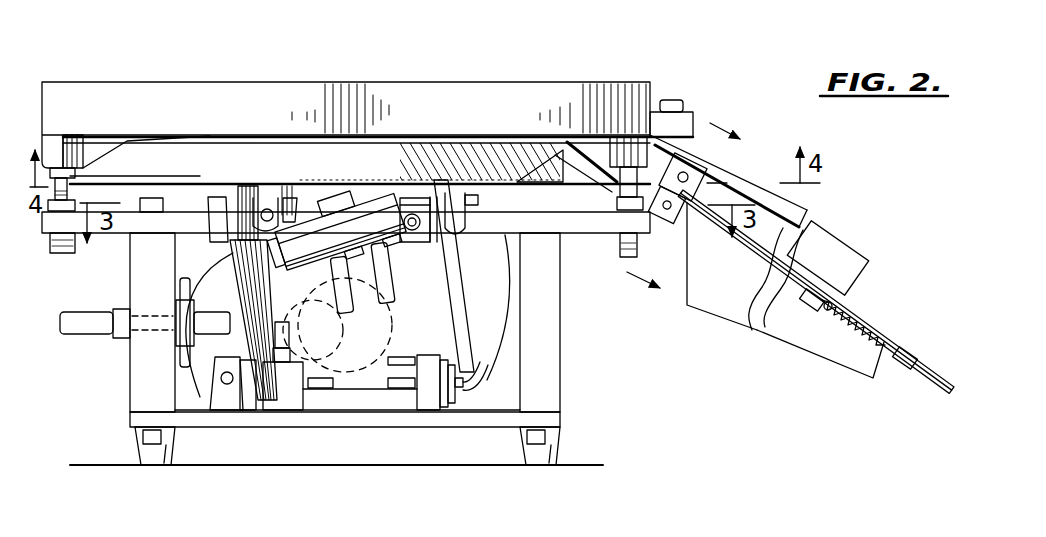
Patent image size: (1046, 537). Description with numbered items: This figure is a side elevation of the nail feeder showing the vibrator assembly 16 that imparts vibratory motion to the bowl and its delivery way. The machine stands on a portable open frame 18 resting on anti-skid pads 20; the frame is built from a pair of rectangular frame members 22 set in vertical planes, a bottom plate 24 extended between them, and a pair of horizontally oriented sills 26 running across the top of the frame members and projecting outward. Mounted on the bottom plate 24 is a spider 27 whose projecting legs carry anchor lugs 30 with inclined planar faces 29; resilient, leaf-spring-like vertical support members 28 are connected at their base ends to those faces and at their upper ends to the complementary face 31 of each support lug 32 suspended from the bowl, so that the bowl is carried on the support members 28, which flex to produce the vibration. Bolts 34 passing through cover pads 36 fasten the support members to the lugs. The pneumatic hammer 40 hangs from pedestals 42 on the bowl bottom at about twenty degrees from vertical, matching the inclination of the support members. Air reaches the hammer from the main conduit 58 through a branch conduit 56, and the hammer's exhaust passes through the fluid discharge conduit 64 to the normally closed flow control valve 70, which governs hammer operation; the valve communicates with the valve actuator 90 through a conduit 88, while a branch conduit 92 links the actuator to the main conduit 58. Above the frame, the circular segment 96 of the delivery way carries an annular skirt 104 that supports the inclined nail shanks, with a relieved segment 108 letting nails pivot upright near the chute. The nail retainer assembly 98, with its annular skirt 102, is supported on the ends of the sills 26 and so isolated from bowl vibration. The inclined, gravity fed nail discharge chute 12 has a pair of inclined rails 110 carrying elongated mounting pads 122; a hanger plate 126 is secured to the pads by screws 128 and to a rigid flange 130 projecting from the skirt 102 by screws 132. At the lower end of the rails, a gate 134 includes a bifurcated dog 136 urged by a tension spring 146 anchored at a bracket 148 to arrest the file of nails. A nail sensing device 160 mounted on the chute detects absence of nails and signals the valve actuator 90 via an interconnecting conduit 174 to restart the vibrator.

The nail discharge chute 12 is at (681, 207).
The vibrator assembly 16 is at (308, 205).
The portable open frame 18 is at (565, 382).
The anti-skid pads 20 is at (142, 450).
The rectangular frame members 22 is at (145, 376).
The bottom plate 24 is at (387, 420).
The sills 26 is at (118, 234).
The spider 27 is at (405, 418).
The vertical support members 28 is at (232, 254).
The inclined planar faces 29 is at (255, 400).
The anchor lugs 30 is at (243, 400).
The face of support lug 31 is at (433, 190).
The support lugs 32 is at (231, 196).
The bolts 34 is at (423, 240).
The cover pads 36 is at (440, 233).
The pneumatic hammer 40 is at (370, 210).
The pedestals 42 is at (330, 200).
The branch conduit 56 is at (340, 297).
The main conduit 58 is at (88, 328).
The fluid discharge conduit 64 is at (339, 307).
The flow control valve 70 is at (292, 420).
The conduit 88 is at (397, 389).
The valve actuator 90 is at (435, 348).
The branch conduit 92 is at (355, 352).
The circular segment 96 is at (255, 145).
The nail retainer assembly 98 is at (477, 93).
The annular skirt 102 is at (142, 103).
The annular skirt 104 is at (96, 150).
The relieved segment 108 is at (557, 187).
The inclined rails 110 is at (760, 323).
The mounting pads 122 is at (857, 260).
The hanger plate 126 is at (752, 180).
The screws 128 is at (755, 157).
The rigid flange 130 is at (687, 123).
The screws 132 is at (673, 100).
The gate 134 is at (955, 390).
The bifurcated dog 136 is at (930, 372).
The tension spring 146 is at (853, 327).
The bracket 148 is at (803, 293).
The nail sensing device 160 is at (681, 226).
The interconnecting conduit 174 is at (490, 378).